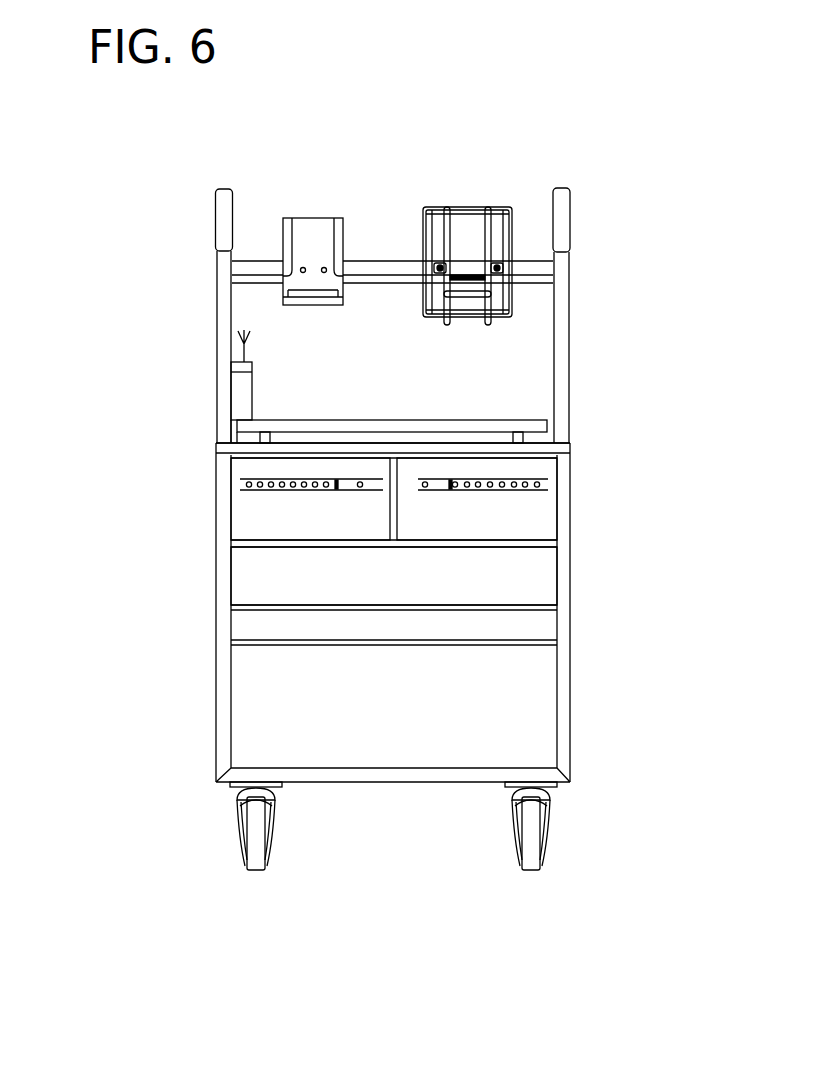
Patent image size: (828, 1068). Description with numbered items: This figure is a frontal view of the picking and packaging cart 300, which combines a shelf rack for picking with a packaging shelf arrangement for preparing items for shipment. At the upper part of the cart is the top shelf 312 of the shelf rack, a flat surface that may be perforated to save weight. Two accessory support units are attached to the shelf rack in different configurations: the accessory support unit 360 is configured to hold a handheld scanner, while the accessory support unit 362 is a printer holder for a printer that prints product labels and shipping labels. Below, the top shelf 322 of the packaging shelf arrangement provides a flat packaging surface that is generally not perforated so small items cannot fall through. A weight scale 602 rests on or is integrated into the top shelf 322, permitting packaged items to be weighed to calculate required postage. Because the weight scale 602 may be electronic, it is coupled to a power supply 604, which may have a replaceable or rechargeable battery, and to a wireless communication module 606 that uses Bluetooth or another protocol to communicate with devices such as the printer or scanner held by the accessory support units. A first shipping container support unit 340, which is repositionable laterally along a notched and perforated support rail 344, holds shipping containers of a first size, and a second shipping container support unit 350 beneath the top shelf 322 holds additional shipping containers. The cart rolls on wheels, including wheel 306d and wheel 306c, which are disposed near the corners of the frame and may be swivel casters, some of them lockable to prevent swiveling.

The picking and packaging cart 300 is at (548, 86).
The top shelf 312 is at (532, 216).
The accessory support unit 360 is at (304, 218).
The accessory support unit 362 is at (452, 207).
The power supply 604 is at (255, 400).
The wireless communication module 606 is at (255, 370).
The weight scale 602 is at (400, 420).
The top shelf 322 is at (541, 446).
The first shipping container support unit 340 is at (350, 492).
The support rail 344 is at (475, 494).
The second shipping container support unit 350 is at (370, 548).
The wheel 306d is at (253, 872).
The wheel 306c is at (535, 872).